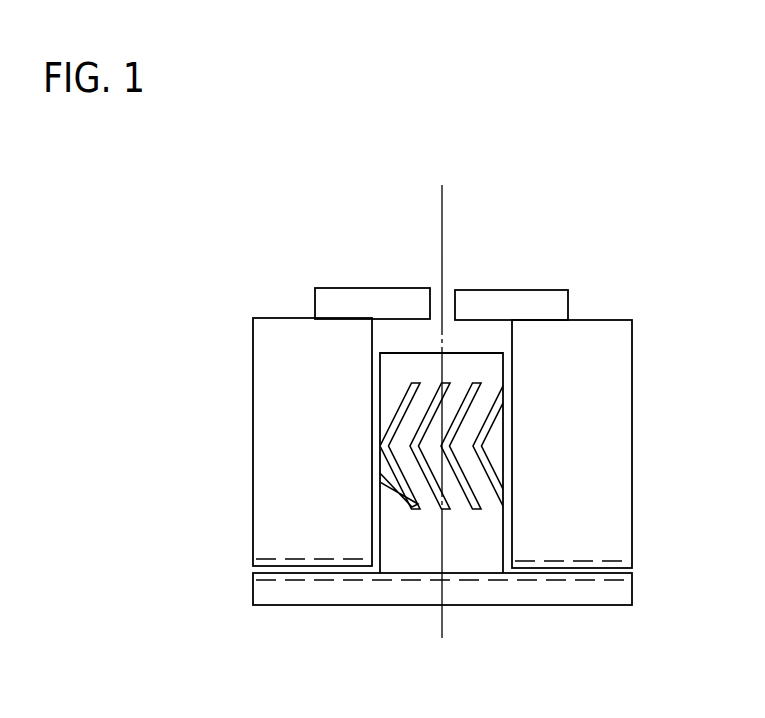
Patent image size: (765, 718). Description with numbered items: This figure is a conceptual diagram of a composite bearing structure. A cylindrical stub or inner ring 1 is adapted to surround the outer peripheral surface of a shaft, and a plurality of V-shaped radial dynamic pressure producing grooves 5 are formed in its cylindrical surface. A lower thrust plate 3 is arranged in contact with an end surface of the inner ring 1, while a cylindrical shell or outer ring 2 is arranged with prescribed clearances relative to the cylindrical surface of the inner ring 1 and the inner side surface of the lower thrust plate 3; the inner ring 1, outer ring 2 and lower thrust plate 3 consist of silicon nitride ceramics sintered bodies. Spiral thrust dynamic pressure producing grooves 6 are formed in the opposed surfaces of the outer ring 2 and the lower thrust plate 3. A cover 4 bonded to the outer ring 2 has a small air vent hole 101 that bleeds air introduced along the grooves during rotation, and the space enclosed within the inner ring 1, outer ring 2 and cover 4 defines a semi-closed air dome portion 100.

The inner ring 1 is at (468, 372).
The outer ring 2 is at (615, 400).
The lower thrust plate 3 is at (625, 595).
The cover 4 is at (540, 309).
The radial dynamic pressure producing grooves 5 is at (513, 415).
The thrust dynamic pressure producing grooves 6 is at (607, 560).
The air dome portion 100 is at (412, 340).
The air vent hole 101 is at (445, 292).